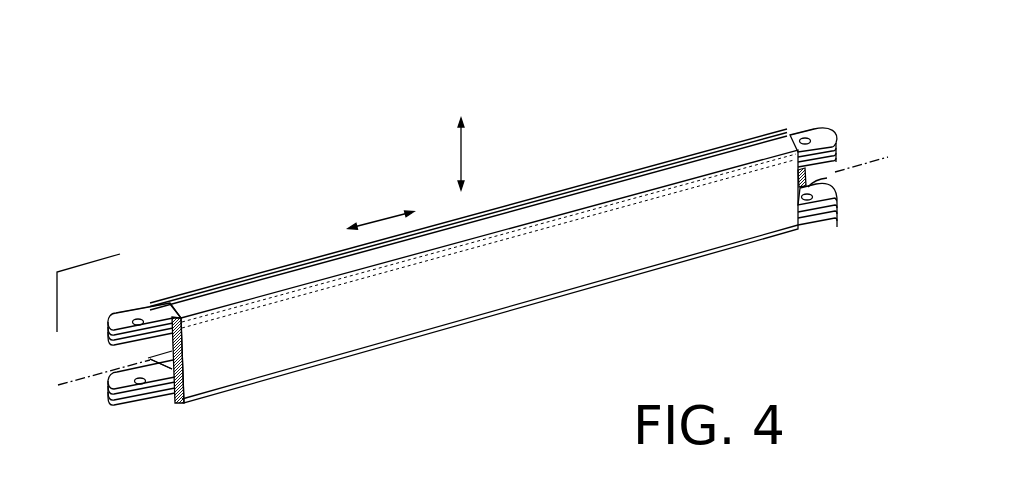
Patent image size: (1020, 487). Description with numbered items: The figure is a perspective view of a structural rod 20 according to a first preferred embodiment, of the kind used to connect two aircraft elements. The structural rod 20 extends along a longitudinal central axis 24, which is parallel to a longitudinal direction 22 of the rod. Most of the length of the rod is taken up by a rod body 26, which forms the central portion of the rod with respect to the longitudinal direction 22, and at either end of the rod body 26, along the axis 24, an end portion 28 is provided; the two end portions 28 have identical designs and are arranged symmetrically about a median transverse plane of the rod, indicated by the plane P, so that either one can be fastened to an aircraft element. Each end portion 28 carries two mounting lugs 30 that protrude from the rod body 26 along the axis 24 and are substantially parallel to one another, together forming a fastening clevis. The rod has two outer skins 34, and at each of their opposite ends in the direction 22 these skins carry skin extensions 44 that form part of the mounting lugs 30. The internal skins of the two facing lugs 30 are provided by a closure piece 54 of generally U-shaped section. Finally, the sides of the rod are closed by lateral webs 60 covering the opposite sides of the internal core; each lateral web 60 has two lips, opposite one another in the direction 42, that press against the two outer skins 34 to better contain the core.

The structural rod 20 is at (668, 108).
The longitudinal direction 22 is at (379, 219).
The longitudinal central axis 24 is at (60, 388).
The rod body 26 is at (543, 180).
The end portion 28 is at (148, 280).
The mounting lug 30 is at (829, 174).
The outer skin 34 is at (313, 272).
The direction 42 is at (463, 153).
The skin extension 44 is at (124, 312).
The closure piece 54 is at (174, 353).
The lateral web 60 is at (366, 336).
The plane P is at (62, 298).